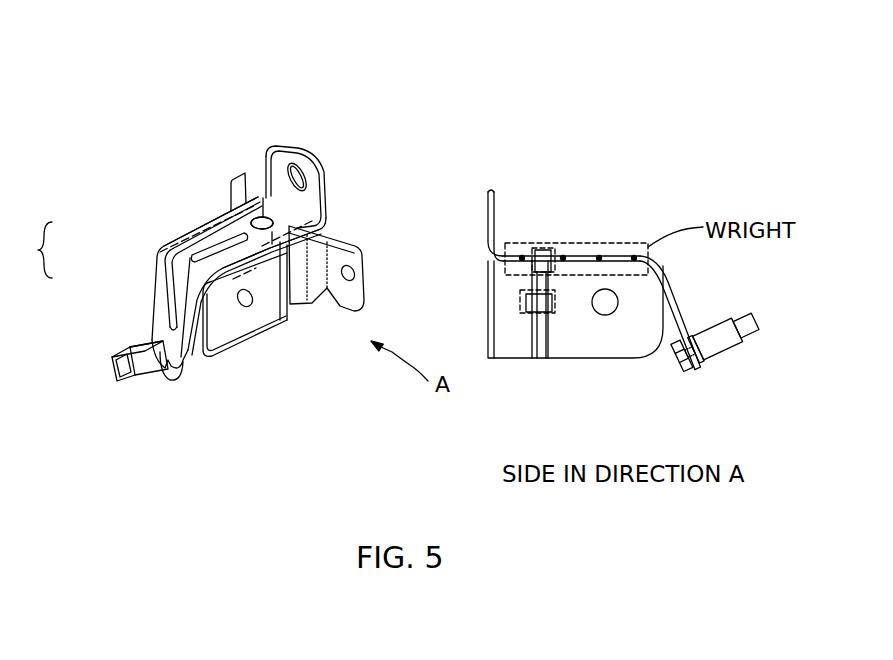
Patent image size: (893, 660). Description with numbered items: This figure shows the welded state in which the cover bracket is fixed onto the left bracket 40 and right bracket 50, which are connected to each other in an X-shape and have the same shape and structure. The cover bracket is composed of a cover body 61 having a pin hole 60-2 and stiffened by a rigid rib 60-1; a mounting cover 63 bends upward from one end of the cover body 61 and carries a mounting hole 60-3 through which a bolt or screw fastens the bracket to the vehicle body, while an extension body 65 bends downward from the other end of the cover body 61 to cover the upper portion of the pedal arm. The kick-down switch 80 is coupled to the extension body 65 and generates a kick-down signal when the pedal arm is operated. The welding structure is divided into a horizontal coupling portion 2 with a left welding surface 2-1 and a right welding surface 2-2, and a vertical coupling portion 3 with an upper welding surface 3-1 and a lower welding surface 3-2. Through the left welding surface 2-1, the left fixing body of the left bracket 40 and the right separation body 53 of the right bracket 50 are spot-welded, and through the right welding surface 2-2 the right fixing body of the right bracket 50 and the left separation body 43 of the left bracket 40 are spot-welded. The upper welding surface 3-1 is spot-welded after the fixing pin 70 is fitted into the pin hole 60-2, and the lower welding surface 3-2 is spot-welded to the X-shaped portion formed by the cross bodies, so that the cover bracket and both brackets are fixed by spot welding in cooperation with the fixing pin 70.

The horizontal coupling portion 2 is at (37, 250).
The left welding surface 2-1 is at (187, 237).
The right welding surface 2-2 is at (233, 282).
The vertical coupling portion 3 is at (346, 205).
The upper welding surface 3-1 is at (270, 214).
The lower welding surface 3-2 is at (270, 226).
The left bracket 40 is at (236, 190).
The left separation body 43 is at (232, 337).
The right bracket 50 is at (347, 297).
The right separation body 53 is at (200, 222).
The rigid rib 60-1 is at (185, 318).
The pin hole 60-2 is at (262, 192).
The mounting hole 60-3 is at (292, 168).
The cover body 61 is at (266, 153).
The mounting cover 63 is at (308, 158).
The extension body 65 is at (160, 333).
The fixing pin 70 is at (253, 273).
The kick-down switch 80 is at (148, 382).